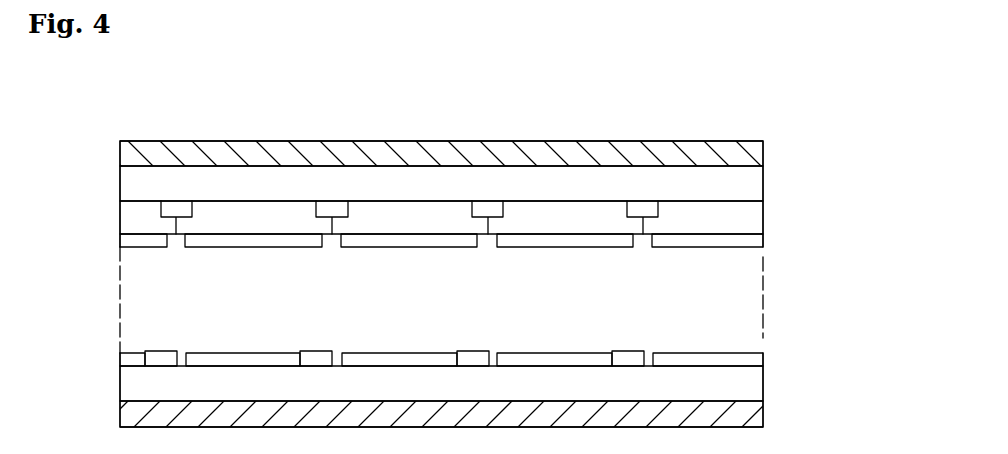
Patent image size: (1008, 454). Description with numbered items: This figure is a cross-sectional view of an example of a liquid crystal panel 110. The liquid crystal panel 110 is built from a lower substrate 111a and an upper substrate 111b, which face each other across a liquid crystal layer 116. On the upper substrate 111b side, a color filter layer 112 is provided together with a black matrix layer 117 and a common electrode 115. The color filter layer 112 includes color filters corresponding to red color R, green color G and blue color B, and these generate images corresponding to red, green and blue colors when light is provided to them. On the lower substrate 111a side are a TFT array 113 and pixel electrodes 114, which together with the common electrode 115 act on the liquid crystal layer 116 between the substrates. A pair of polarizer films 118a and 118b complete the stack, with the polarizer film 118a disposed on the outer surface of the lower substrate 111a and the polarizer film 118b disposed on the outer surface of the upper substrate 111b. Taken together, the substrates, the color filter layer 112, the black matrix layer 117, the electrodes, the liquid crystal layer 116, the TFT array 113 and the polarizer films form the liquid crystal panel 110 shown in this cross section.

The liquid crystal panel 110 is at (448, 82).
The lower substrate 111a is at (755, 378).
The upper substrate 111b is at (300, 181).
The color filter layer 112 is at (227, 210).
The TFT array 113 is at (162, 353).
The pixel electrodes 114 is at (222, 356).
The common electrode 115 is at (200, 248).
The liquid crystal layer 116 is at (757, 302).
The black matrix layer 117 is at (490, 206).
The polarizer film 118a is at (757, 410).
The polarizer film 118b is at (755, 152).